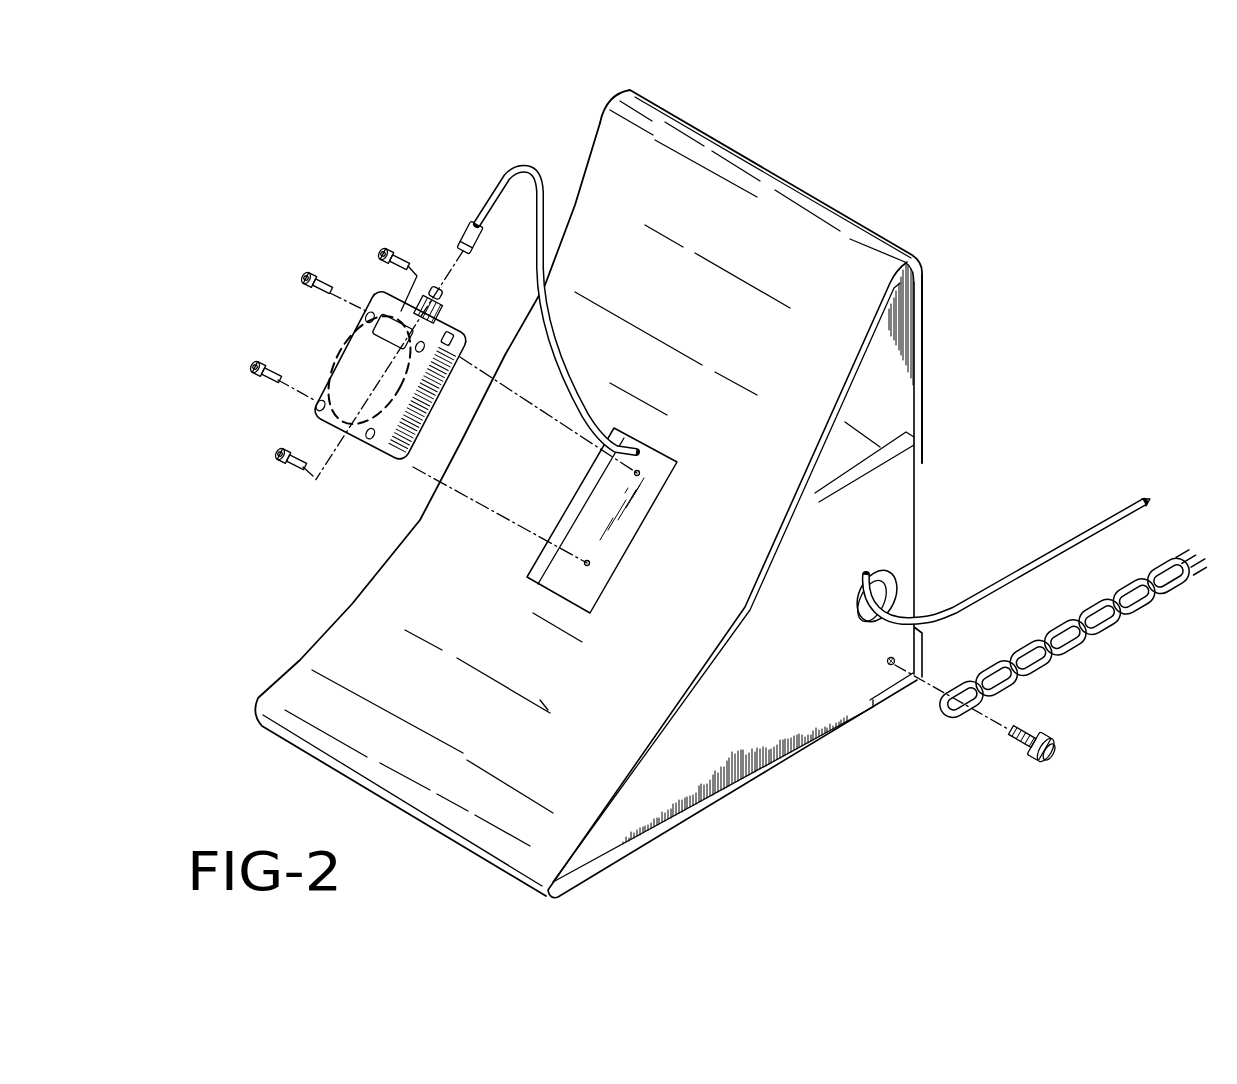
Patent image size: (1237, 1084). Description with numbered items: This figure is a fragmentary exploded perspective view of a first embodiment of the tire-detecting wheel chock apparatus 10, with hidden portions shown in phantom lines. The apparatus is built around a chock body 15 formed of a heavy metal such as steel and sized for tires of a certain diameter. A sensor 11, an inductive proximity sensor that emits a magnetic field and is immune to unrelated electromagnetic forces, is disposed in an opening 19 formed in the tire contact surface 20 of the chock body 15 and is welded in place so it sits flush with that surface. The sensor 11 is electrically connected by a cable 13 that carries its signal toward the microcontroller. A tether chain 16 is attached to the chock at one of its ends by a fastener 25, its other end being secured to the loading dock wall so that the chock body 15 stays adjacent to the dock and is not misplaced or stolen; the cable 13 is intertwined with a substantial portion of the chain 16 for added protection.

The tire-detecting wheel chock apparatus 10 is at (1033, 253).
The sensor 11 is at (328, 360).
The cable 13 is at (500, 185).
The chock body 15 is at (779, 172).
The tether chain 16 is at (1085, 637).
The opening 19 is at (612, 590).
The tire contact surface 20 is at (345, 658).
The fastener 25 is at (1020, 747).